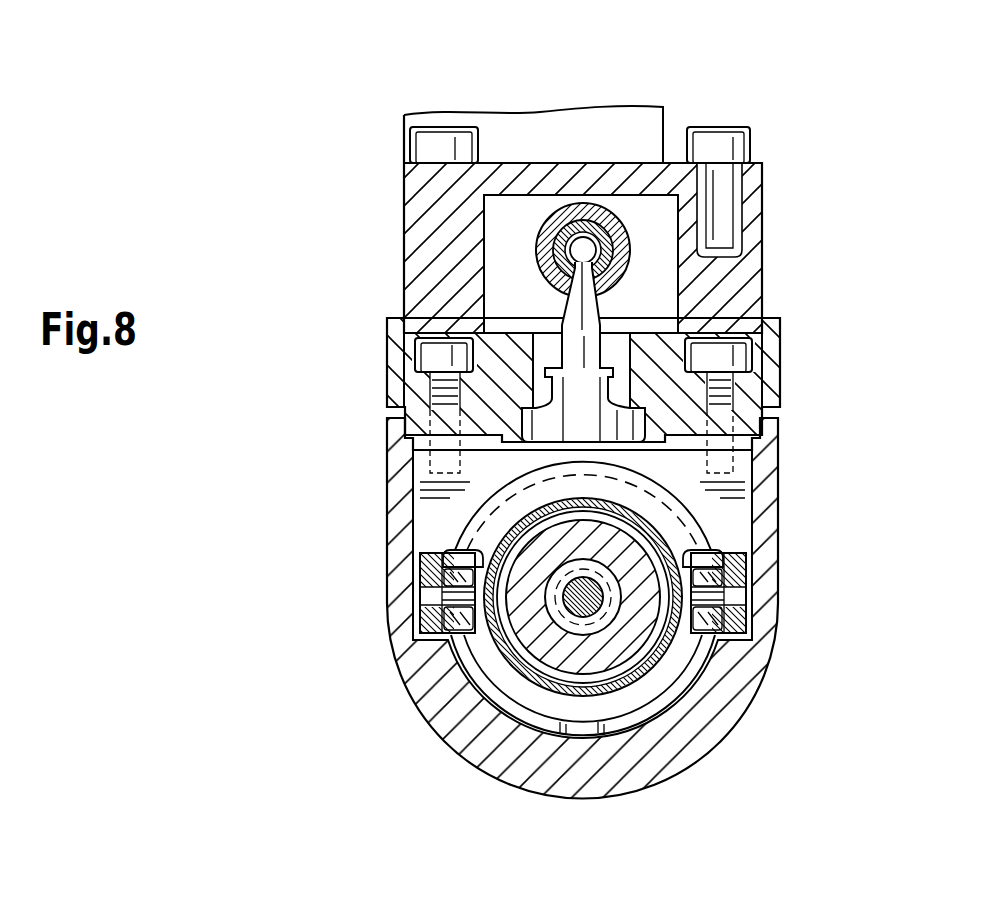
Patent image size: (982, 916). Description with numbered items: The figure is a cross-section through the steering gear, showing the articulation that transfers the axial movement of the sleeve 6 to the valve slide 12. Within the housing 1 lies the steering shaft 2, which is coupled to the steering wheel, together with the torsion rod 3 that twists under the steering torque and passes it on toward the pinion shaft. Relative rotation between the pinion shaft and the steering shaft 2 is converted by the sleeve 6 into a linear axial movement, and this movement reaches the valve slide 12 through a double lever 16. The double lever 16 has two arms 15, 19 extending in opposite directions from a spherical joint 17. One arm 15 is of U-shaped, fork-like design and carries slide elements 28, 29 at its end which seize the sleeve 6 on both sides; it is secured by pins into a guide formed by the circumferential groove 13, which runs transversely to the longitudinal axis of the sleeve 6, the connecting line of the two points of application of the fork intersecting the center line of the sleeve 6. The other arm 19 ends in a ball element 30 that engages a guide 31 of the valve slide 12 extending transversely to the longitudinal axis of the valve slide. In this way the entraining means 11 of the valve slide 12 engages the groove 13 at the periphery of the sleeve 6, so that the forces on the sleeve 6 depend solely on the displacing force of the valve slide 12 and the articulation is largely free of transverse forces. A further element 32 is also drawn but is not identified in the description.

The housing 1 is at (695, 732).
The steering shaft 2 is at (558, 668).
The torsion rod 3 is at (585, 607).
The sleeve 6 is at (566, 660).
The entraining means 11 is at (522, 177).
The valve slide 12 is at (599, 224).
The circumferential groove 13 is at (490, 662).
The arm 15 is at (716, 488).
The double lever 16 is at (553, 326).
The spherical joint 17 is at (624, 398).
The arm 19 is at (573, 313).
The slide element 28 is at (443, 635).
The slide element 29 is at (722, 635).
The ball element 30 is at (632, 256).
The guide 31 is at (581, 237).
The bushing outer ring 32 is at (630, 235).